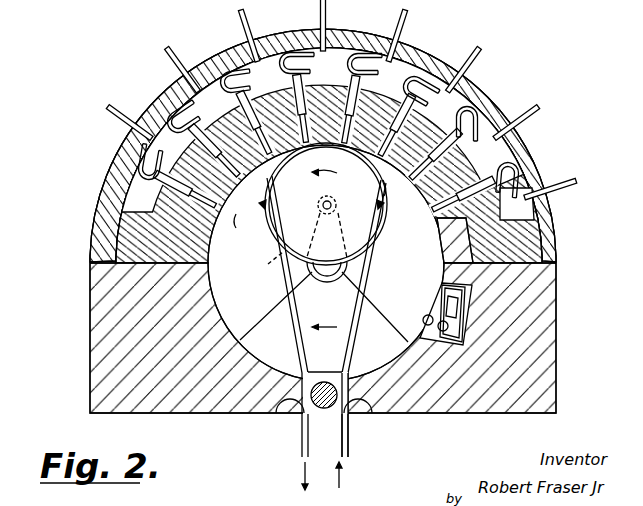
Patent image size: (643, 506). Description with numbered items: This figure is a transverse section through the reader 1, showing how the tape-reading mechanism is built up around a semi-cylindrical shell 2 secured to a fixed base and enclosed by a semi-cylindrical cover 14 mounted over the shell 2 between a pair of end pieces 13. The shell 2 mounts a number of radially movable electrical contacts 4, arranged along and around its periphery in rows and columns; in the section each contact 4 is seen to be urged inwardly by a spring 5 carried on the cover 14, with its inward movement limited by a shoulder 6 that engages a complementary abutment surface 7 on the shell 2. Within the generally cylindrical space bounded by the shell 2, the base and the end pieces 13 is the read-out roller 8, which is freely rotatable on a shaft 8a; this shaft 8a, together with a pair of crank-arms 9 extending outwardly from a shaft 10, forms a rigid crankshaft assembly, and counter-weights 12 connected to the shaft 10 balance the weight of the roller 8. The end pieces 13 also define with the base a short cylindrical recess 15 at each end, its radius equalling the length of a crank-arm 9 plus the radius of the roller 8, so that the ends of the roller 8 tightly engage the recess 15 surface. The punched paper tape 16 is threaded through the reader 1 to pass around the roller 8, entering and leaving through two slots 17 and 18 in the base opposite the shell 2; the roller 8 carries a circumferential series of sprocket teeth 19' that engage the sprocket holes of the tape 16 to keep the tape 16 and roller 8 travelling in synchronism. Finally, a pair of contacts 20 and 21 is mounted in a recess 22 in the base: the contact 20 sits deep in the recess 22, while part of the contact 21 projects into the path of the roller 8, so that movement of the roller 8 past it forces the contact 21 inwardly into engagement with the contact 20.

The reader 1 is at (210, 42).
The semi-cylindrical shell 2 is at (421, 123).
The electrical contacts 4 is at (262, 78).
The spring 5 is at (477, 50).
The shoulder 6 is at (257, 96).
The abutment surface 7 is at (357, 130).
The read-out roller 8 is at (287, 217).
The shaft 8a is at (266, 267).
The crank-arms 9 is at (492, 408).
The shaft 10 is at (333, 268).
The counter-weights 12 is at (280, 310).
The end pieces 13 is at (427, 182).
The semi-cylindrical cover 14 is at (351, 30).
The cylindrical recess 15 is at (245, 231).
The punched paper tape 16 is at (343, 452).
The slot 17 is at (352, 408).
The slot 18 is at (290, 400).
The sprocket teeth 19' is at (401, 211).
The contact 20 is at (428, 324).
The contact 21 is at (430, 320).
The recess 22 is at (466, 307).